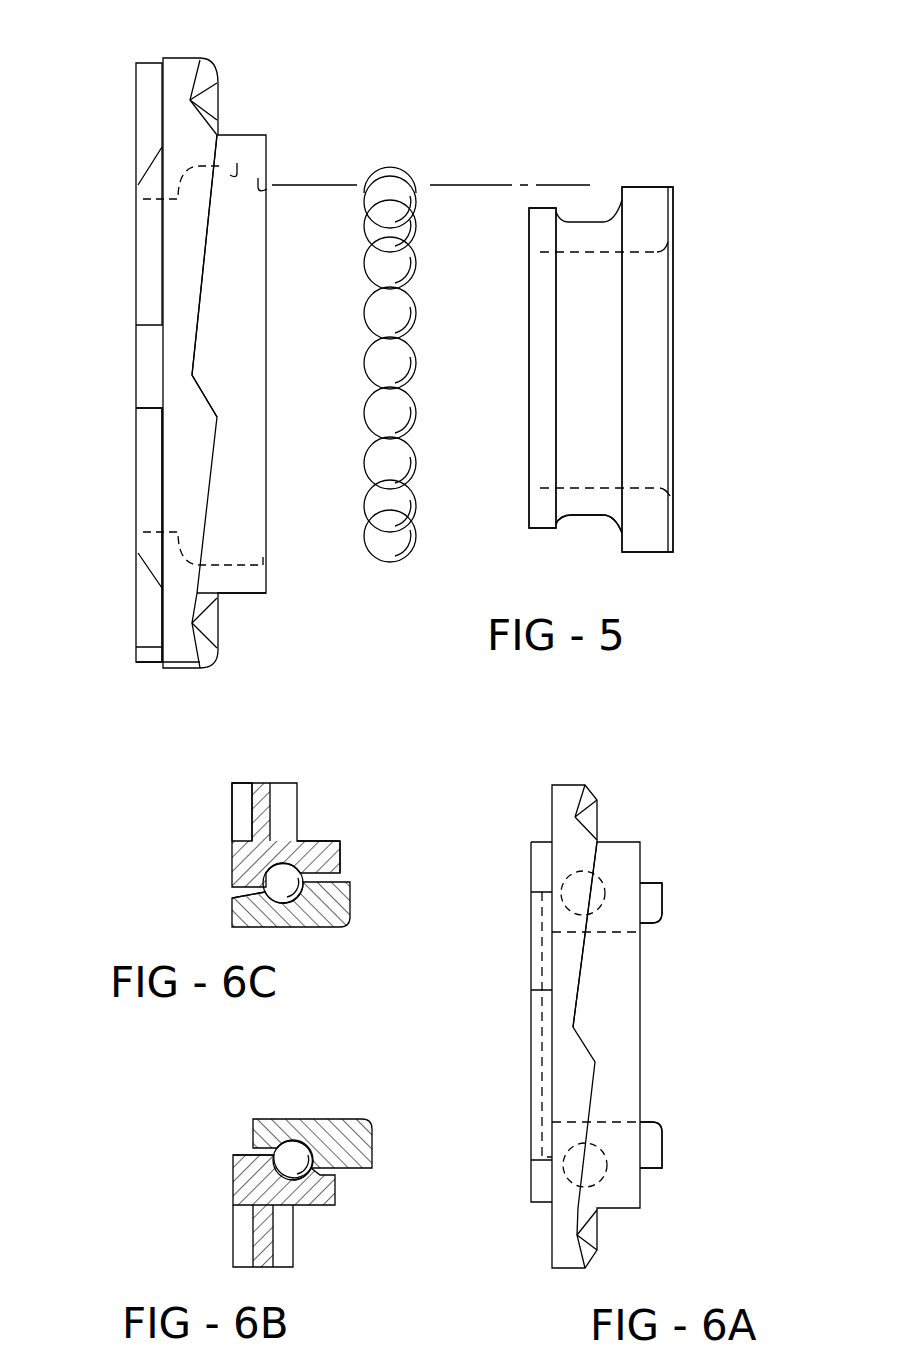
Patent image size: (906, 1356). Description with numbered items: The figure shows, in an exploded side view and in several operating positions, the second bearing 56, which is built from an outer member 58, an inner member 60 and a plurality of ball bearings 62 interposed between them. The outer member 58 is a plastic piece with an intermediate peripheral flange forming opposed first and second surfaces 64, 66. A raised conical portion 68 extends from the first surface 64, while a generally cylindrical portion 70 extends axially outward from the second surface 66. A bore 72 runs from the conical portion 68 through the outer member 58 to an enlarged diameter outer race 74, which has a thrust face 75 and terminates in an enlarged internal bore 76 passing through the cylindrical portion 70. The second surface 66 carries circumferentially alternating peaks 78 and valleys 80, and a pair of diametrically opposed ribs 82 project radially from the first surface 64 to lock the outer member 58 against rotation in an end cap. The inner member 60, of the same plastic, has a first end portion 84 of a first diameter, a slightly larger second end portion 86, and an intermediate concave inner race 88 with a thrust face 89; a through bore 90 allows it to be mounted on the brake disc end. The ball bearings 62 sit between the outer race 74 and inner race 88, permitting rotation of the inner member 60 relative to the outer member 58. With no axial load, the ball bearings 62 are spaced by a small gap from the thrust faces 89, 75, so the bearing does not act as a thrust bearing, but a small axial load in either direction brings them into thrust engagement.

In FIG. 5, the second bearing 56 is at (660, 48).
In FIG. 6C, the second bearing 56 is at (233, 773).
In FIG. 6B, the second bearing 56 is at (146, 1221).
In FIG. 6A, the second bearing 56 is at (609, 786).
In FIG. 5, the outer member 58 is at (142, 53).
In FIG. 6C, the outer member 58 is at (241, 803).
In FIG. 6B, the outer member 58 is at (261, 1238).
In FIG. 5, the inner member 60 is at (565, 130).
In FIG. 6C, the inner member 60 is at (322, 912).
In FIG. 6B, the inner member 60 is at (350, 1060).
In FIG. 5, the ball bearings 62 is at (381, 168).
In FIG. 6C, the ball bearings 62 is at (270, 883).
In FIG. 6B, the ball bearings 62 is at (280, 1158).
In FIG. 6A, the ball bearings 62 is at (612, 893).
In FIG. 5, the first surface 64 is at (140, 648).
In FIG. 5, the second surface 66 is at (209, 636).
In FIG. 5, the raised conical portion 68 is at (133, 573).
In FIG. 5, the cylindrical portion 70 is at (250, 593).
In FIG. 5, the bore 72 is at (143, 531).
In FIG. 6B, the bore 72 is at (252, 1157).
In FIG. 5, the outer race 74 is at (237, 163).
In FIG. 6C, the outer race 74 is at (302, 862).
In FIG. 6B, the outer race 74 is at (273, 1169).
In FIG. 6A, the outer race 74 is at (606, 879).
In FIG. 6C, the thrust face 75 is at (277, 870).
In FIG. 6B, the thrust face 75 is at (308, 1175).
In FIG. 5, the internal bore 76 is at (258, 178).
In FIG. 6C, the internal bore 76 is at (338, 872).
In FIG. 5, the peaks 78 is at (217, 417).
In FIG. 5, the valleys 80 is at (192, 375).
In FIG. 5, the ribs 82 is at (135, 97).
In FIG. 5, the first end portion 84 is at (540, 503).
In FIG. 5, the second end portion 86 is at (667, 538).
In FIG. 5, the inner race 88 is at (573, 517).
In FIG. 6C, the inner race 88 is at (262, 900).
In FIG. 6B, the inner race 88 is at (300, 1146).
In FIG. 6A, the inner race 88 is at (583, 908).
In FIG. 6C, the thrust face 89 is at (287, 904).
In FIG. 6B, the thrust face 89 is at (316, 1158).
In FIG. 5, the through bore 90 is at (645, 482).